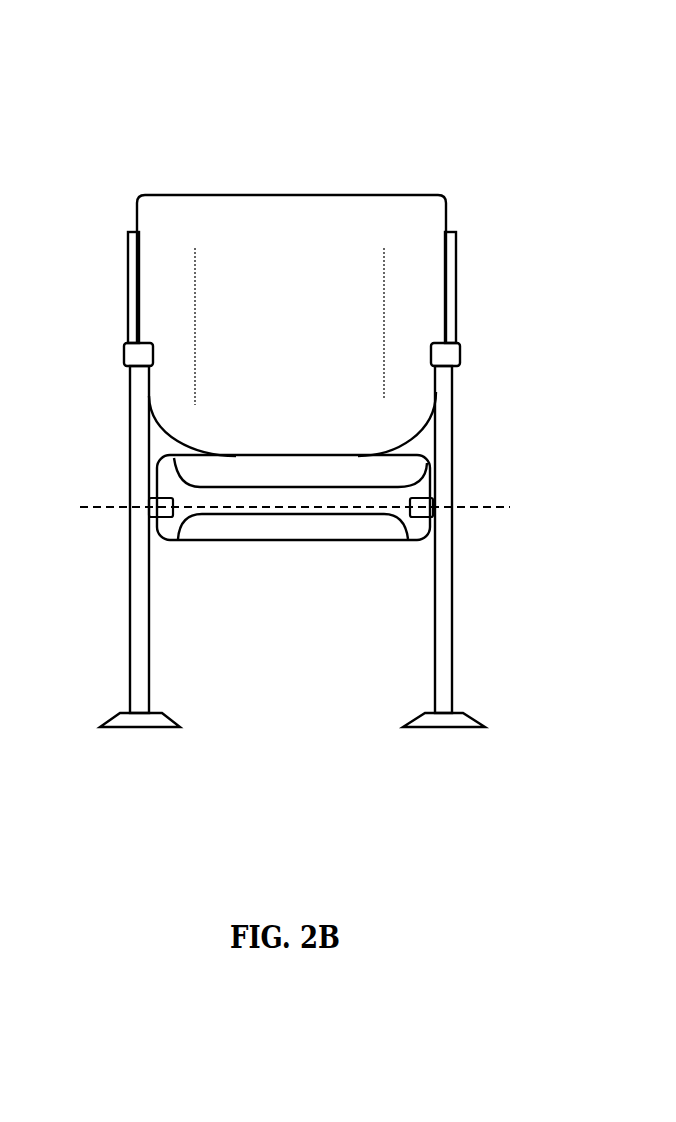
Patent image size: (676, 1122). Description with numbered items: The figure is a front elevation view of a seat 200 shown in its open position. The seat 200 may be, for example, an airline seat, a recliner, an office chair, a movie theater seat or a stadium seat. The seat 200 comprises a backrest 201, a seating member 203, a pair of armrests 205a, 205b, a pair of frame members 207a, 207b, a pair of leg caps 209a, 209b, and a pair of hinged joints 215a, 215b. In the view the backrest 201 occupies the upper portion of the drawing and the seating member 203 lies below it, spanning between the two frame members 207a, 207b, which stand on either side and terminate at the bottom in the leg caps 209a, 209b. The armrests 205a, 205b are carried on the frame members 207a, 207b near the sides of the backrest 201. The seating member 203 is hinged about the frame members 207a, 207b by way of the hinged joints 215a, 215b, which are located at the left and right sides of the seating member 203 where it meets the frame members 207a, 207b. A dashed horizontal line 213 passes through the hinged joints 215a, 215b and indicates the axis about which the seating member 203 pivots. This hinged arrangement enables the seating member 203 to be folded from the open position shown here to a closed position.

The seat 200 is at (132, 87).
The backrest 201 is at (314, 197).
The seating member 203 is at (278, 472).
The armrest 205a is at (124, 354).
The armrest 205b is at (460, 354).
The frame member 207a is at (130, 557).
The frame member 207b is at (453, 610).
The leg cap 209a is at (109, 725).
The leg cap 209b is at (466, 716).
The pivot axis 213 is at (274, 507).
The hinged joint 215a is at (175, 511).
The hinged joint 215b is at (420, 518).